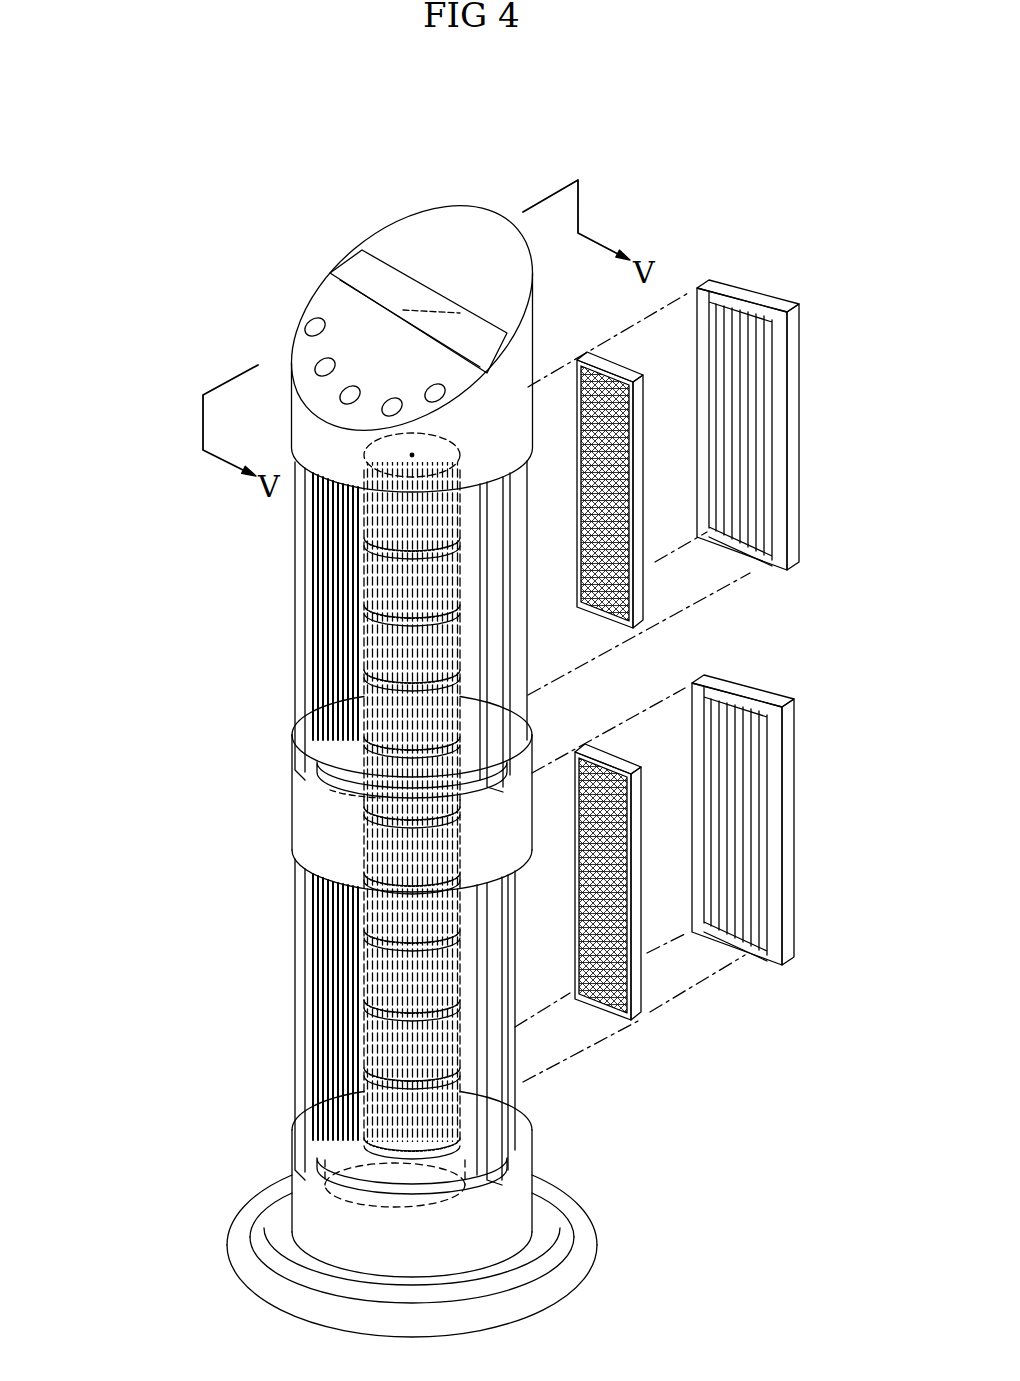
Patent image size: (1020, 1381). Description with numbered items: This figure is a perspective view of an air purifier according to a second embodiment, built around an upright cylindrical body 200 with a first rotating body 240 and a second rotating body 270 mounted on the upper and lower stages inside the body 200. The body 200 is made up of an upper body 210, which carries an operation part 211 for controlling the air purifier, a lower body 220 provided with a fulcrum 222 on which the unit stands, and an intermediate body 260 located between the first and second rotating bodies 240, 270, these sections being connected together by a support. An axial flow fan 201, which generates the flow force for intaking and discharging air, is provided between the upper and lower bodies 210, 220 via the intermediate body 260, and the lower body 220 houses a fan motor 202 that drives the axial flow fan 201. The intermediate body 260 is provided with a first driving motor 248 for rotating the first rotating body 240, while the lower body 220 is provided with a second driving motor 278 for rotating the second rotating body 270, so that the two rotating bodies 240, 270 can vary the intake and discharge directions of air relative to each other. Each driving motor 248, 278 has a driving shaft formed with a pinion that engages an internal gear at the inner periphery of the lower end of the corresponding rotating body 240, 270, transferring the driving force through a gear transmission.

The cylindrical body 200 is at (262, 385).
The axial flow fan 201 is at (378, 832).
The fan motor 202 is at (401, 1196).
The upper body 210 is at (530, 338).
The operation part 211 is at (342, 310).
The lower body 220 is at (522, 1198).
The fulcrum 222 is at (552, 1282).
The first rotating body 240 is at (468, 716).
The first driving motor 248 is at (338, 785).
The intermediate body 260 is at (503, 835).
The second rotating body 270 is at (468, 1101).
The second driving motor 278 is at (338, 1188).